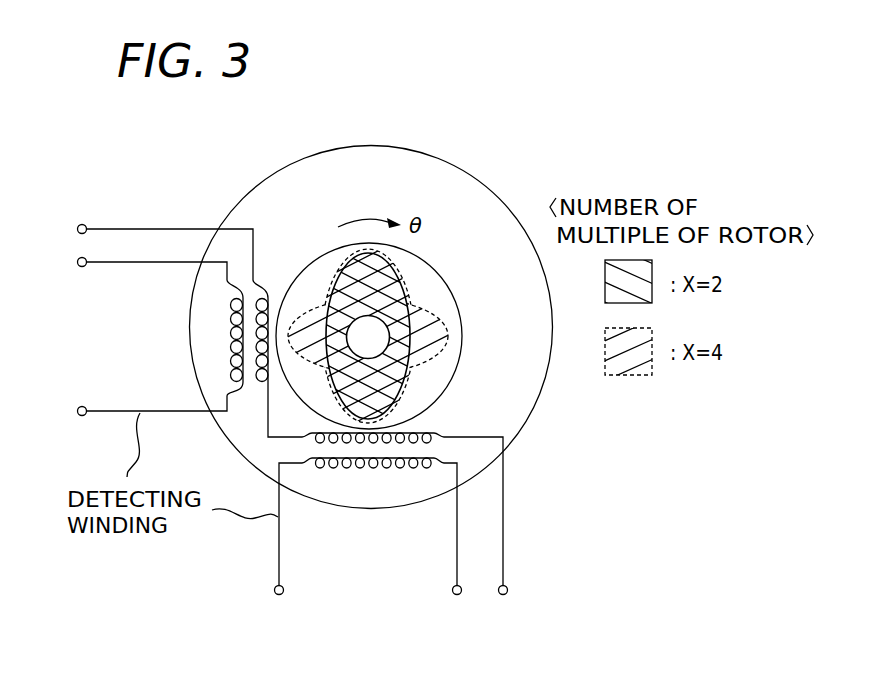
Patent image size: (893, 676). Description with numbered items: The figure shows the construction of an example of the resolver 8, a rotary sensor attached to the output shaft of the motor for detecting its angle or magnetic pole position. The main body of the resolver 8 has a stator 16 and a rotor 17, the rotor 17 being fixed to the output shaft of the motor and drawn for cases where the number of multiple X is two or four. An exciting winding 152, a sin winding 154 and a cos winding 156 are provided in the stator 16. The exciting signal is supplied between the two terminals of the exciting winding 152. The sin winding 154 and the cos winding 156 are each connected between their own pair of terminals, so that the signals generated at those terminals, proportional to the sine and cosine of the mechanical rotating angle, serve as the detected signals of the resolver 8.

The resolver 8 is at (382, 112).
The stator 16 is at (438, 158).
The rotor 17 is at (420, 258).
The exciting winding 152 is at (503, 508).
The sin winding 154 is at (358, 472).
The cos winding 156 is at (225, 307).